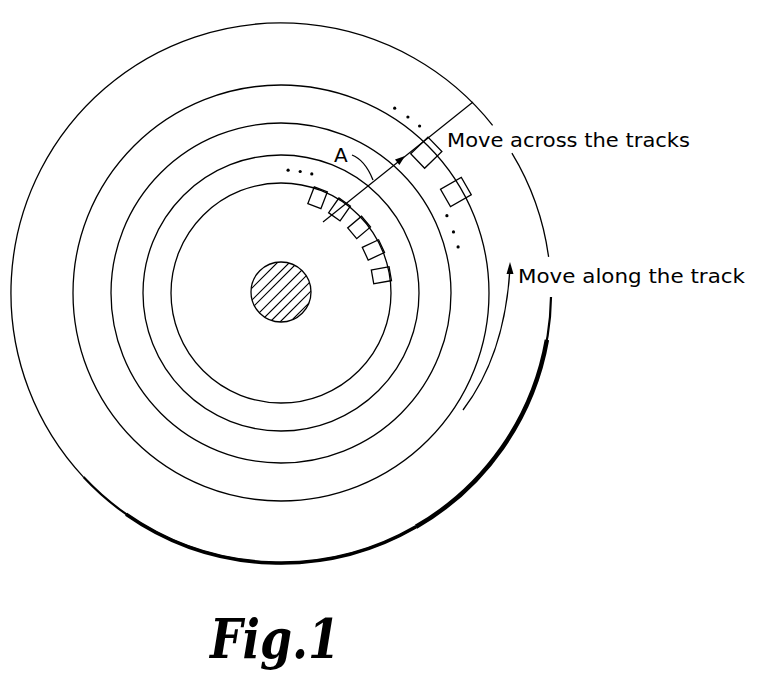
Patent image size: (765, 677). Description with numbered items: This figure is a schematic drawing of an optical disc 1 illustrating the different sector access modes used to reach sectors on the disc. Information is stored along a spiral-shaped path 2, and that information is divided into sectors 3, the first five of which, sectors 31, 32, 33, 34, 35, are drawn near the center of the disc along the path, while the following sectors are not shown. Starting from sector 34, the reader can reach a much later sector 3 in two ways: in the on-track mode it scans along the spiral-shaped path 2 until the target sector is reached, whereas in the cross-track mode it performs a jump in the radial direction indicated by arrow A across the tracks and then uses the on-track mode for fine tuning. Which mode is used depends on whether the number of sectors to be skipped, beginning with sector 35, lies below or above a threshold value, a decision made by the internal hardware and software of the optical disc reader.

The optical disc 1 is at (413, 62).
The spiral-shaped path 2 is at (307, 87).
The sector 3 is at (497, 212).
The sector 3_1 31 is at (376, 284).
The sector 3_2 32 is at (364, 256).
The sector 3_3 33 is at (351, 230).
The sector 3_4 34 is at (333, 208).
The sector 3_5 35 is at (308, 198).